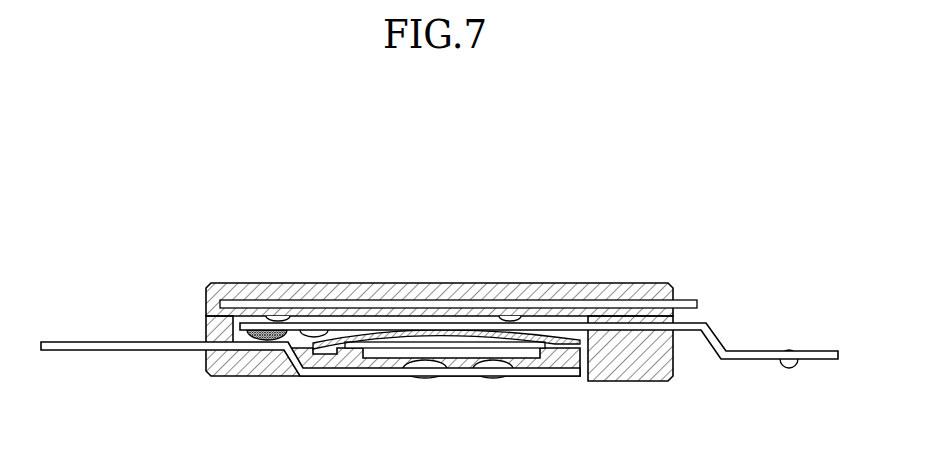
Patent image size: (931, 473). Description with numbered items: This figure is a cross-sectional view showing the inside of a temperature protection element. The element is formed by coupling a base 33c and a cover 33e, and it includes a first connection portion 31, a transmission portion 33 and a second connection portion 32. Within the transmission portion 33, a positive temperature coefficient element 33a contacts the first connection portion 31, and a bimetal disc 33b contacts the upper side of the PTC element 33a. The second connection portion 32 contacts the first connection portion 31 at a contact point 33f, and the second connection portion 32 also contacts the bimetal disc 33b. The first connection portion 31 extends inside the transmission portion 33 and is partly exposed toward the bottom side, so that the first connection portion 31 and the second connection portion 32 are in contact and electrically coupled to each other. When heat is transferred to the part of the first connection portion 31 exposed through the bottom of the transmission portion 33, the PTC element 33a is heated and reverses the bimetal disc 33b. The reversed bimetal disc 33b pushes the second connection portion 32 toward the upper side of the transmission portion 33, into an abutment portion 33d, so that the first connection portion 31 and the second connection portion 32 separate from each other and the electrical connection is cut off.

The first connection portion 31 is at (97, 352).
The second connection portion 32 is at (815, 360).
The transmission portion 33 is at (467, 321).
The positive temperature coefficient element 33a is at (384, 355).
The bimetal disc 33b is at (452, 334).
The base 33c is at (626, 366).
The abutment portion 33d is at (687, 303).
The cover 33e is at (574, 288).
The contact point 33f is at (267, 332).